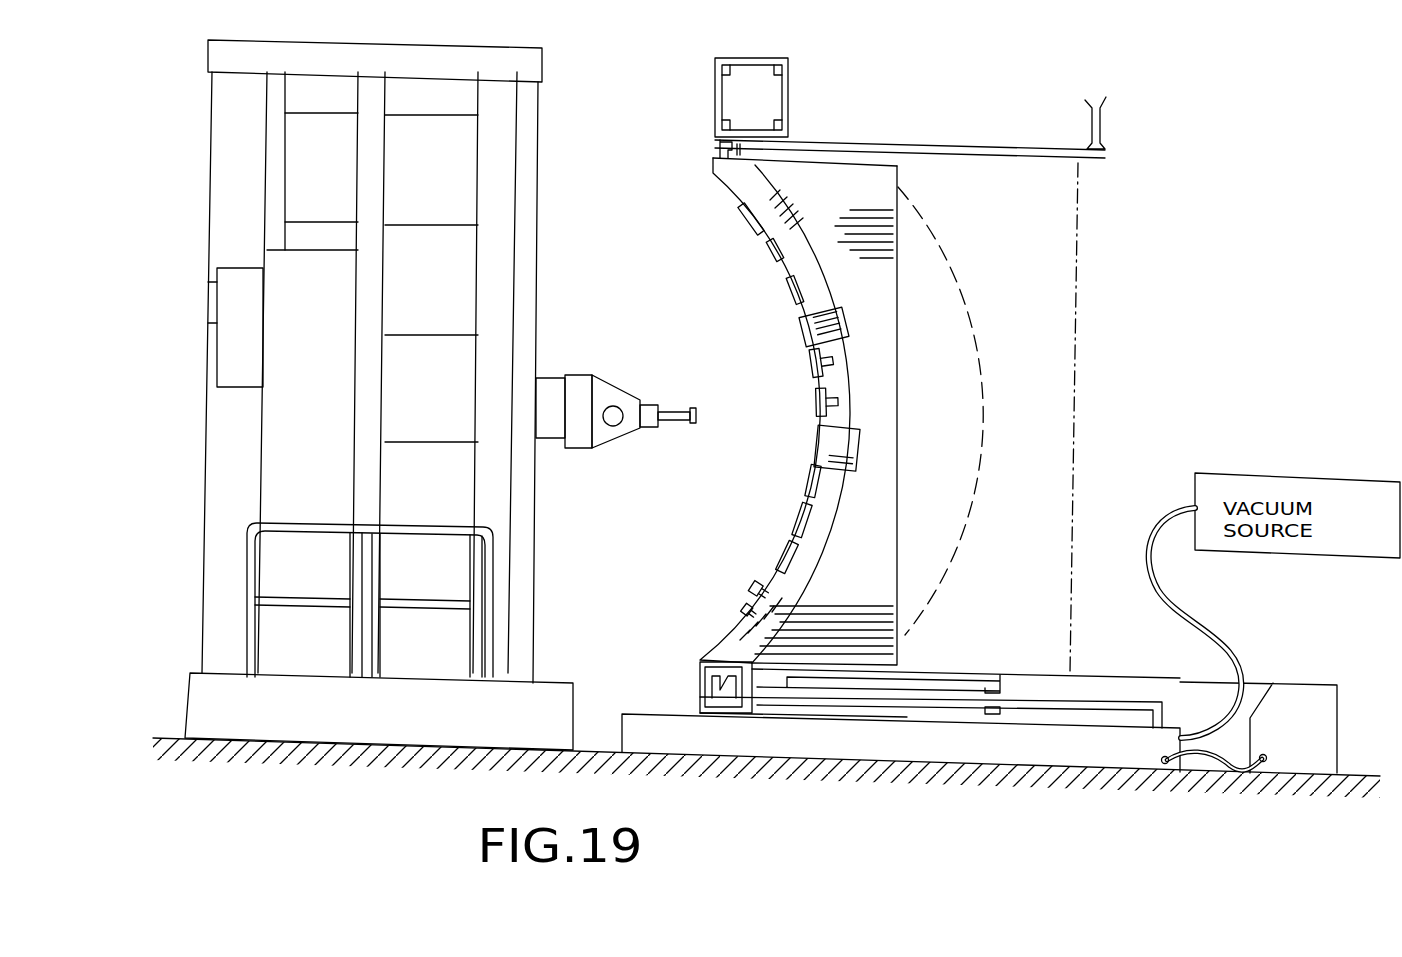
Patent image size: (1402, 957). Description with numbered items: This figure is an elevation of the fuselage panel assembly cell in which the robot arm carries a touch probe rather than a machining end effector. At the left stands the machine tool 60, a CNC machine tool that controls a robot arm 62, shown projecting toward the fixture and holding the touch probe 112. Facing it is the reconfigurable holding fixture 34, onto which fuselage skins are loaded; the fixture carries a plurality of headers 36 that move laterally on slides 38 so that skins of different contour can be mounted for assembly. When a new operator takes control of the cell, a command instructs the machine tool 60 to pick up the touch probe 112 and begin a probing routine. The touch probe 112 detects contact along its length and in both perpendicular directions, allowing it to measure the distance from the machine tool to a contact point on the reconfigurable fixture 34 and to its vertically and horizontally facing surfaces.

The reconfigurable holding fixture 34 is at (668, 561).
The headers 36 is at (822, 320).
The slides 38 is at (906, 700).
The machine tool 60 is at (460, 273).
The robot arm 62 is at (578, 448).
The touch probe 112 is at (684, 410).